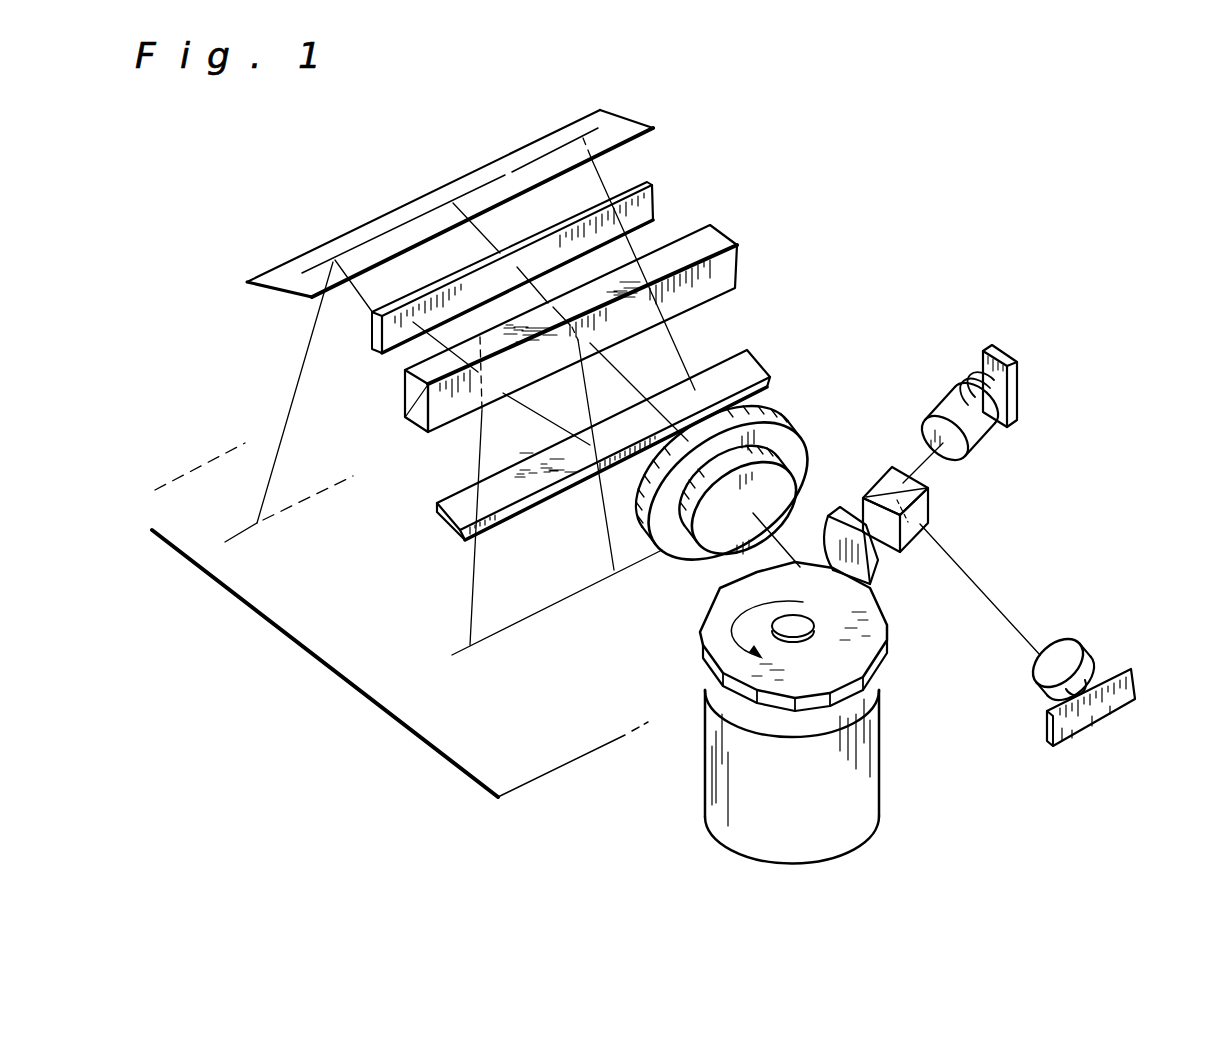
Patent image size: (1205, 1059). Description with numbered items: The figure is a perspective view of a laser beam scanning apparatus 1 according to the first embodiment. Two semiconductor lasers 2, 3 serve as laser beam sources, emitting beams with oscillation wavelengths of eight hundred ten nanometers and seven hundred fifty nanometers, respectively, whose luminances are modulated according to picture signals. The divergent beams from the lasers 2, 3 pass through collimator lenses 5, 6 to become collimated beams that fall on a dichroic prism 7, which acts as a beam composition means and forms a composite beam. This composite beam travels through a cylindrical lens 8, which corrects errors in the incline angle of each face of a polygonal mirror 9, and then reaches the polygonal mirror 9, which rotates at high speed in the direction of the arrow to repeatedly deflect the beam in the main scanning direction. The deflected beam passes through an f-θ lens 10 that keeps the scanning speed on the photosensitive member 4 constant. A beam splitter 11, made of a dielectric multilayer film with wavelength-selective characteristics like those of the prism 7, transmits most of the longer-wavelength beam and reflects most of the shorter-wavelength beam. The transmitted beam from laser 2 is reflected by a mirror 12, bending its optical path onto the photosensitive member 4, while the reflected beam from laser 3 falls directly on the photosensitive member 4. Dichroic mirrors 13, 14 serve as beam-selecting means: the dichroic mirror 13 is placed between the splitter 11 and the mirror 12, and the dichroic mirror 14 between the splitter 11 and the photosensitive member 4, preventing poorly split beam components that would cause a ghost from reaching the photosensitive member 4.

The scanning apparatus 1 is at (893, 288).
The semiconductor laser 2 is at (1018, 383).
The semiconductor laser 3 is at (1135, 682).
The photosensitive member 4 is at (370, 700).
The collimator lens 5 is at (980, 452).
The collimator lens 6 is at (1085, 663).
The dichroic prism 7 is at (922, 480).
The cylindrical lens 8 is at (883, 568).
The polygonal mirror 9 is at (722, 645).
The f-θ lens 10 is at (787, 417).
The beam splitter 11 is at (737, 258).
The mirror 12 is at (630, 113).
The dichroic mirror 13 is at (660, 197).
The dichroic mirror 14 is at (763, 367).